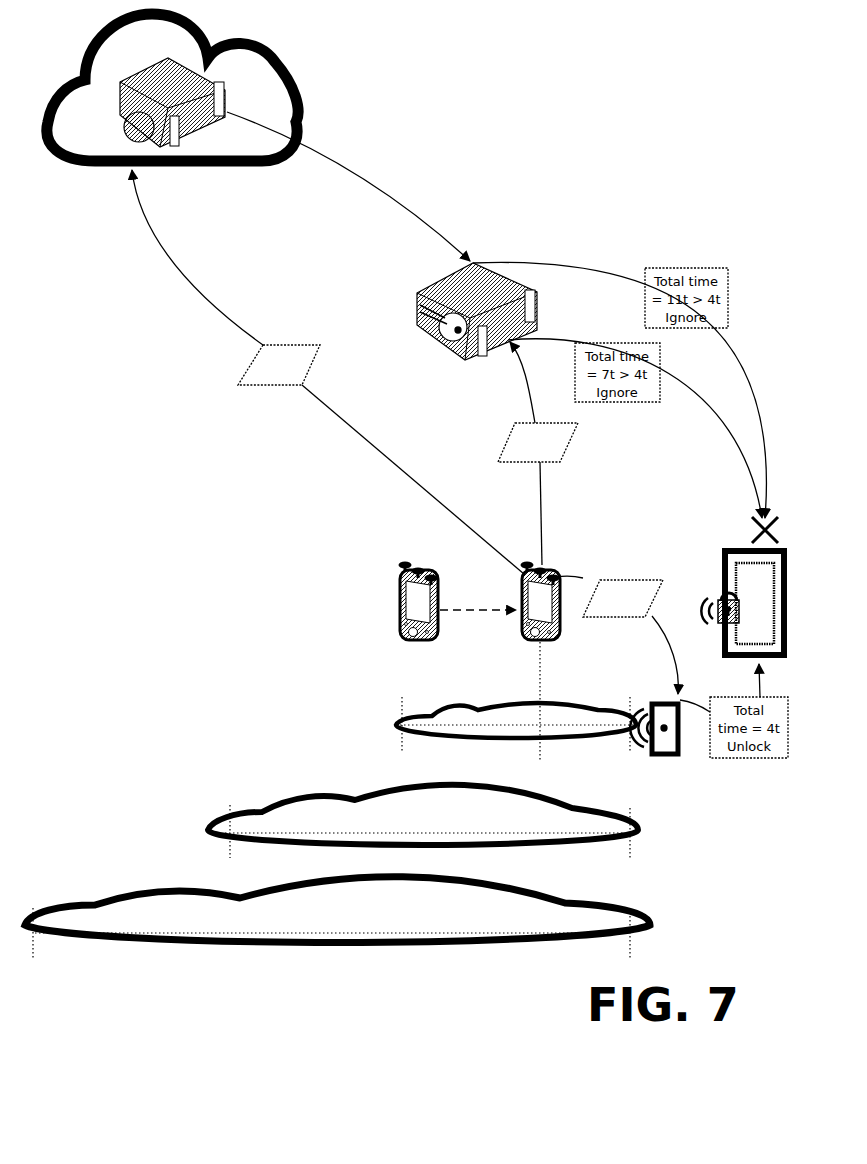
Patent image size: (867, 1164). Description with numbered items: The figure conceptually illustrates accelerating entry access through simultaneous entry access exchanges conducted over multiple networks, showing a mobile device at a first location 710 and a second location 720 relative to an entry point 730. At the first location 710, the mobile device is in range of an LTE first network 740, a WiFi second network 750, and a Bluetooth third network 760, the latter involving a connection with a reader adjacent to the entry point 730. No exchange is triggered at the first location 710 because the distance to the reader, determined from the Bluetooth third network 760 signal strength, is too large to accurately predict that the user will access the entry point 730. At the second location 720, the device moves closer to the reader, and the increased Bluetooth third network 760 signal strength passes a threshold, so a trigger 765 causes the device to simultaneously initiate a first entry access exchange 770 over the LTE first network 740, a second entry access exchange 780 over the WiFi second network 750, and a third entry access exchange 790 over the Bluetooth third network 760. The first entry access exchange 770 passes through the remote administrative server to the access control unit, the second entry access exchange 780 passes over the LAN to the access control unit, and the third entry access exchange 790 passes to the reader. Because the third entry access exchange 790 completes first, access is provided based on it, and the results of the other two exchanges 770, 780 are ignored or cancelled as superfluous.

The first location 710 is at (402, 605).
The second location 720 is at (522, 623).
The entry point 730 is at (722, 550).
The LTE first network 740 is at (98, 905).
The WiFi second network 750 is at (210, 827).
The Bluetooth third network 760 is at (397, 728).
The trigger 765 is at (540, 763).
The first entry access exchange 770 is at (279, 365).
The second entry access exchange 780 is at (538, 442).
The third entry access exchange 790 is at (623, 598).